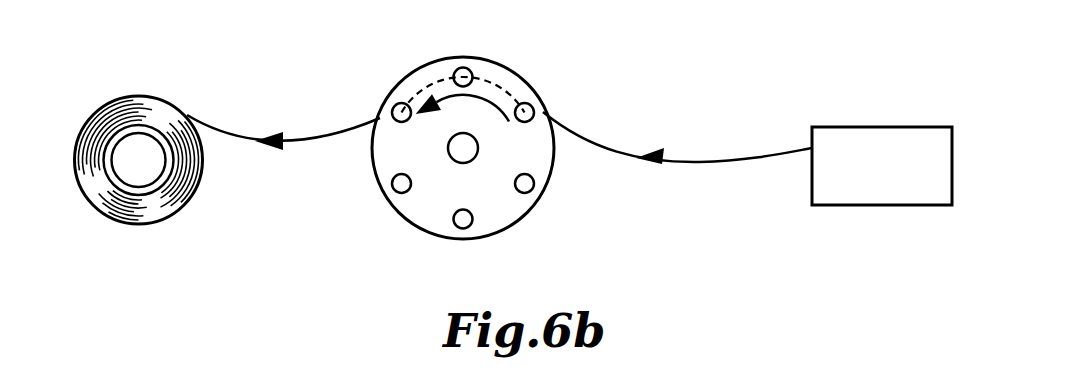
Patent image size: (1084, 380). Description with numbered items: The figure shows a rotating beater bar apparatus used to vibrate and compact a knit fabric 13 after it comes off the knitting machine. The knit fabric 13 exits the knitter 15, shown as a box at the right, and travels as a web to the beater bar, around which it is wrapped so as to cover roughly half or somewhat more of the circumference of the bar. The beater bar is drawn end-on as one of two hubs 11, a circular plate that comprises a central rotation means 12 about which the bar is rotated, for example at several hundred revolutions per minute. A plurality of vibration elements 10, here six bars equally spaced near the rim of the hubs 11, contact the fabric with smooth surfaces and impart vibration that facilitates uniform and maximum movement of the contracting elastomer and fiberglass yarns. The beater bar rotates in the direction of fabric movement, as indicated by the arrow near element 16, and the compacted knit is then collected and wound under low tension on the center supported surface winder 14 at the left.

The vibrational elements 10 is at (524, 193).
The hubs 11 is at (428, 64).
The rotation means 12 is at (450, 162).
The knit fabric 13 is at (743, 160).
The center supported surface winder 14 is at (167, 103).
The knitter 15 is at (898, 125).
The rotating wheel 16 is at (526, 50).